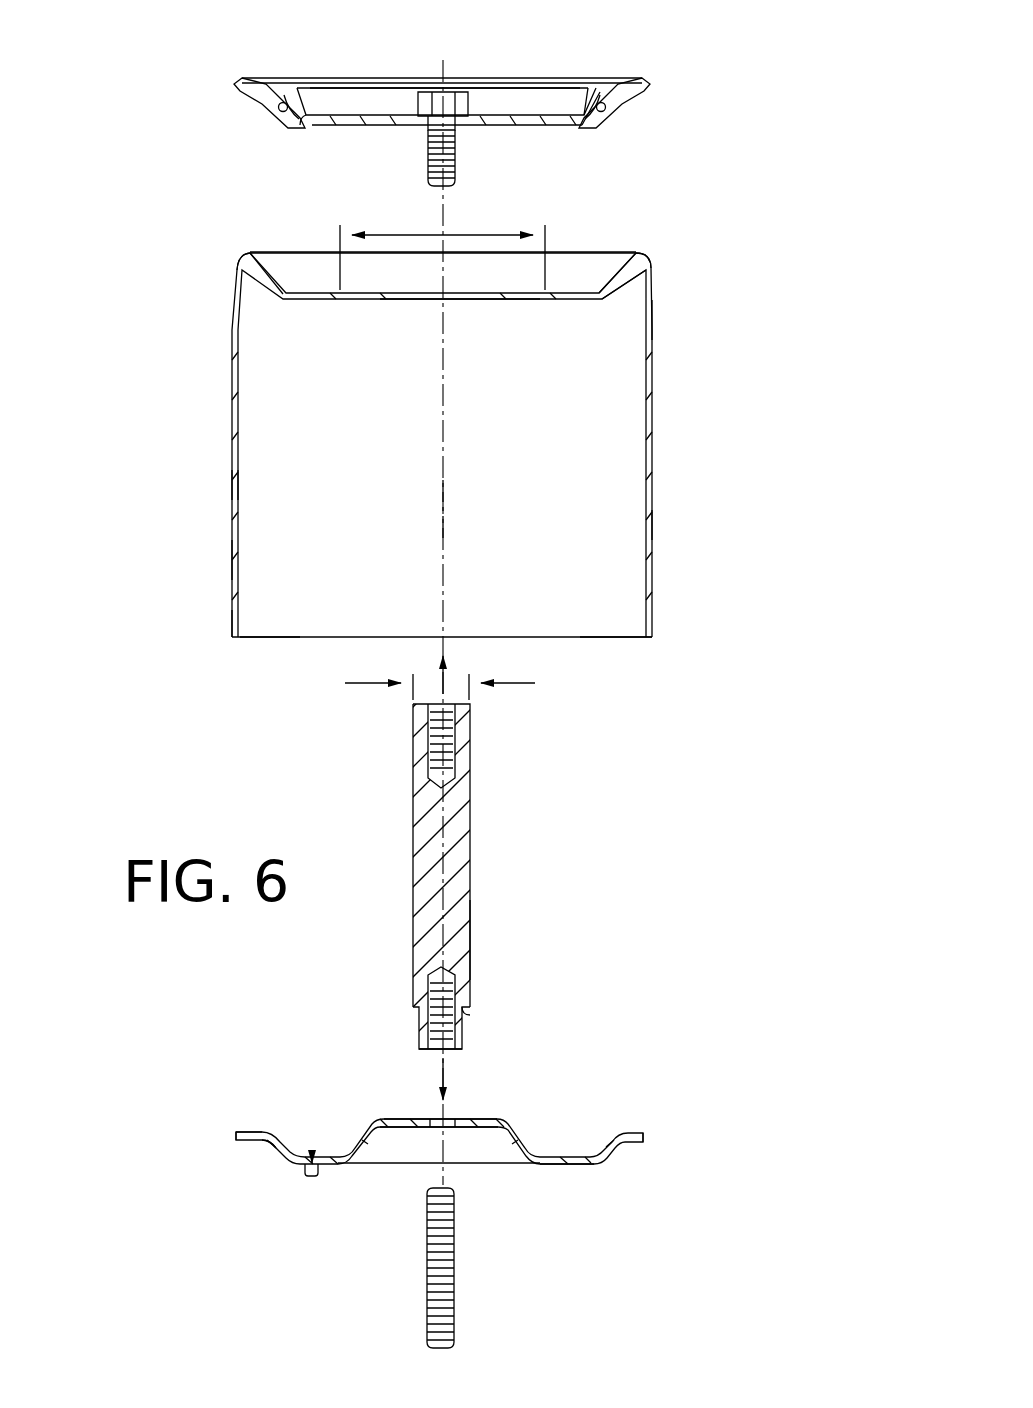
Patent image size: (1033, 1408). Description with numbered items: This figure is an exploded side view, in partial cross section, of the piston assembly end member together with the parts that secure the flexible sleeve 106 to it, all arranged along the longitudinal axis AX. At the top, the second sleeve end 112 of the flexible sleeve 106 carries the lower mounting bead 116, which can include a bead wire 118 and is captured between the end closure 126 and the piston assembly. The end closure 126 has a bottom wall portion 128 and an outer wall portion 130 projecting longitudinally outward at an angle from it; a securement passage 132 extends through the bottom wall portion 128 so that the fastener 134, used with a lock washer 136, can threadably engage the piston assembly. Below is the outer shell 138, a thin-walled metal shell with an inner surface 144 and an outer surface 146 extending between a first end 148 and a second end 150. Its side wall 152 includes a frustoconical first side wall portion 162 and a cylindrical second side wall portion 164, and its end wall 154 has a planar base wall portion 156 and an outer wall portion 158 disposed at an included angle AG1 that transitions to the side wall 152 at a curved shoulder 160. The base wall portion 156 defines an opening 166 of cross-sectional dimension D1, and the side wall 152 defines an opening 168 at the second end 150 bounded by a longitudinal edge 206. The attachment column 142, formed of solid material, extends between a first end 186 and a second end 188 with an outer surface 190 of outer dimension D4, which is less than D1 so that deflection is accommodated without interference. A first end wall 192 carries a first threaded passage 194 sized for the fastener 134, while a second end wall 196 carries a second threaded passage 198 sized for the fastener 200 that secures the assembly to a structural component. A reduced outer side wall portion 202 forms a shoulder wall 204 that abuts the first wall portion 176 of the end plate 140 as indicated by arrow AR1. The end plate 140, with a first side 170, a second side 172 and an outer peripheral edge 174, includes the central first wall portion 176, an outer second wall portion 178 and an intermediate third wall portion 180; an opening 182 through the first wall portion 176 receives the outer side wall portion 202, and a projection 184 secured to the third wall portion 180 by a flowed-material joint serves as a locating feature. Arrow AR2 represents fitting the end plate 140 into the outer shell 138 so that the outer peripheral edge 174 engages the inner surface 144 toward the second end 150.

The flexible sleeve 106 is at (243, 78).
The second sleeve end 112 is at (241, 103).
The lower mounting bead 116 is at (268, 123).
The bead wire 118 is at (618, 110).
The end closure 126 is at (522, 104).
The bottom wall portion 128 is at (576, 126).
The outer wall portion 130 is at (583, 96).
The securement passage 132 is at (430, 132).
The fastener 134 is at (448, 128).
The lock washer 136 is at (420, 110).
The outer shell 138 is at (696, 440).
The end plate 140 is at (676, 1155).
The attachment column 142 is at (487, 860).
The inner surface 144 is at (240, 478).
The outer surface 146 is at (226, 478).
The first end 148 is at (225, 258).
The second end 150 is at (224, 632).
The side wall 152 is at (226, 550).
The end wall 154 is at (512, 310).
The base wall portion 156 is at (562, 302).
The outer wall portion 158 is at (622, 280).
The shoulder 160 is at (646, 256).
The first side wall portion 162 is at (656, 308).
The second side wall portion 164 is at (656, 524).
The opening 166 is at (421, 310).
The opening 168 is at (262, 641).
The first side 170 is at (241, 1090).
The second side 172 is at (263, 1190).
The outer peripheral edge 174 is at (264, 1136).
The first wall portion 176 is at (481, 1120).
The second wall portion 178 is at (626, 1134).
The third wall portion 180 is at (570, 1168).
The opening 182 is at (431, 1131).
The projection 184 is at (310, 1178).
The first end 186 is at (526, 745).
The second end 188 is at (556, 1014).
The outer surface 190 is at (472, 945).
The first end wall 192 is at (434, 698).
The first threaded passage 194 is at (426, 735).
The second end wall 196 is at (422, 1049).
The second threaded passage 198 is at (426, 990).
The fastener 200 is at (456, 1285).
The outer side wall portion 202 is at (465, 1042).
The shoulder wall 204 is at (472, 1016).
The longitudinal edge 206 is at (610, 640).
The included angle AG1 is at (242, 216).
The arrow AR1 is at (440, 1065).
The arrow AR2 is at (447, 692).
The longitudinal axis AX is at (436, 525).
The cross-sectional dimension D1 is at (448, 234).
The outer dimension D4 is at (460, 685).